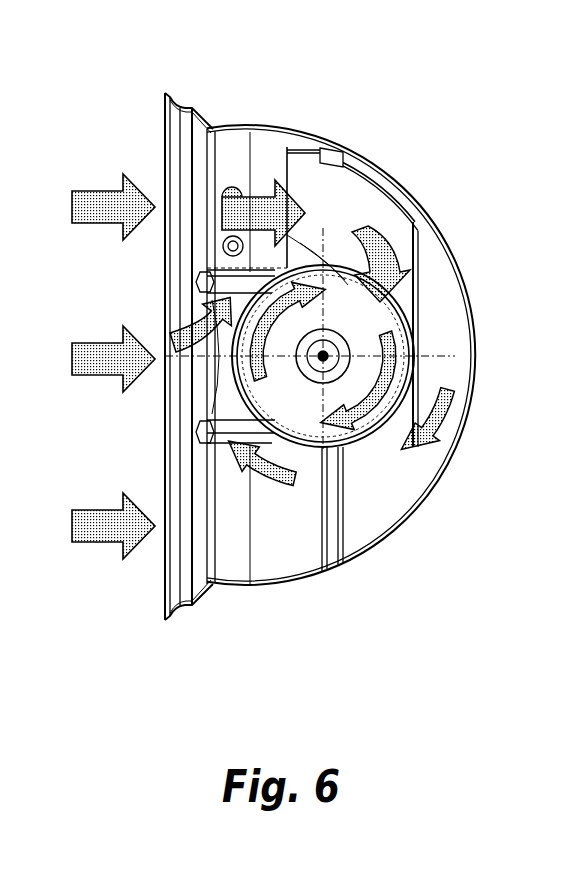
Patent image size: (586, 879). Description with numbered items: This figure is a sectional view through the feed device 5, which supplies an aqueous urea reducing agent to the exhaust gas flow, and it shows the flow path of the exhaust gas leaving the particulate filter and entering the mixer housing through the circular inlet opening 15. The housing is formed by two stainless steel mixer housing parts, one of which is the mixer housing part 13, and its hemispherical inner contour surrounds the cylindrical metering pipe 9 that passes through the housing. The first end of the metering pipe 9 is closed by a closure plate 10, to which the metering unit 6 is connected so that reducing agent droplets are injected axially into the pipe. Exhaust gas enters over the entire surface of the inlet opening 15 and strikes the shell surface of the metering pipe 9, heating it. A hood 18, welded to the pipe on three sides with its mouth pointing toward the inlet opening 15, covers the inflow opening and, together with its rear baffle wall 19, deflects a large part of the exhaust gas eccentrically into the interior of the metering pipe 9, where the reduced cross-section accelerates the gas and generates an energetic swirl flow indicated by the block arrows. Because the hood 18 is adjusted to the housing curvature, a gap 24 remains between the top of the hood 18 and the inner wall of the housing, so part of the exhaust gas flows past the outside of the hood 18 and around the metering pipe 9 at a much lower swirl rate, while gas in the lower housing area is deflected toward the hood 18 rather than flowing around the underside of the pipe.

The feed device 5 is at (446, 185).
The metering unit 6 is at (334, 349).
The metering pipe 9 is at (368, 448).
The closure plate 10 is at (307, 419).
The mixer housing part 13 is at (227, 126).
The inlet opening 15 is at (161, 148).
The hood 18 is at (390, 189).
The baffle wall 19 is at (424, 266).
The gap 24 is at (359, 162).